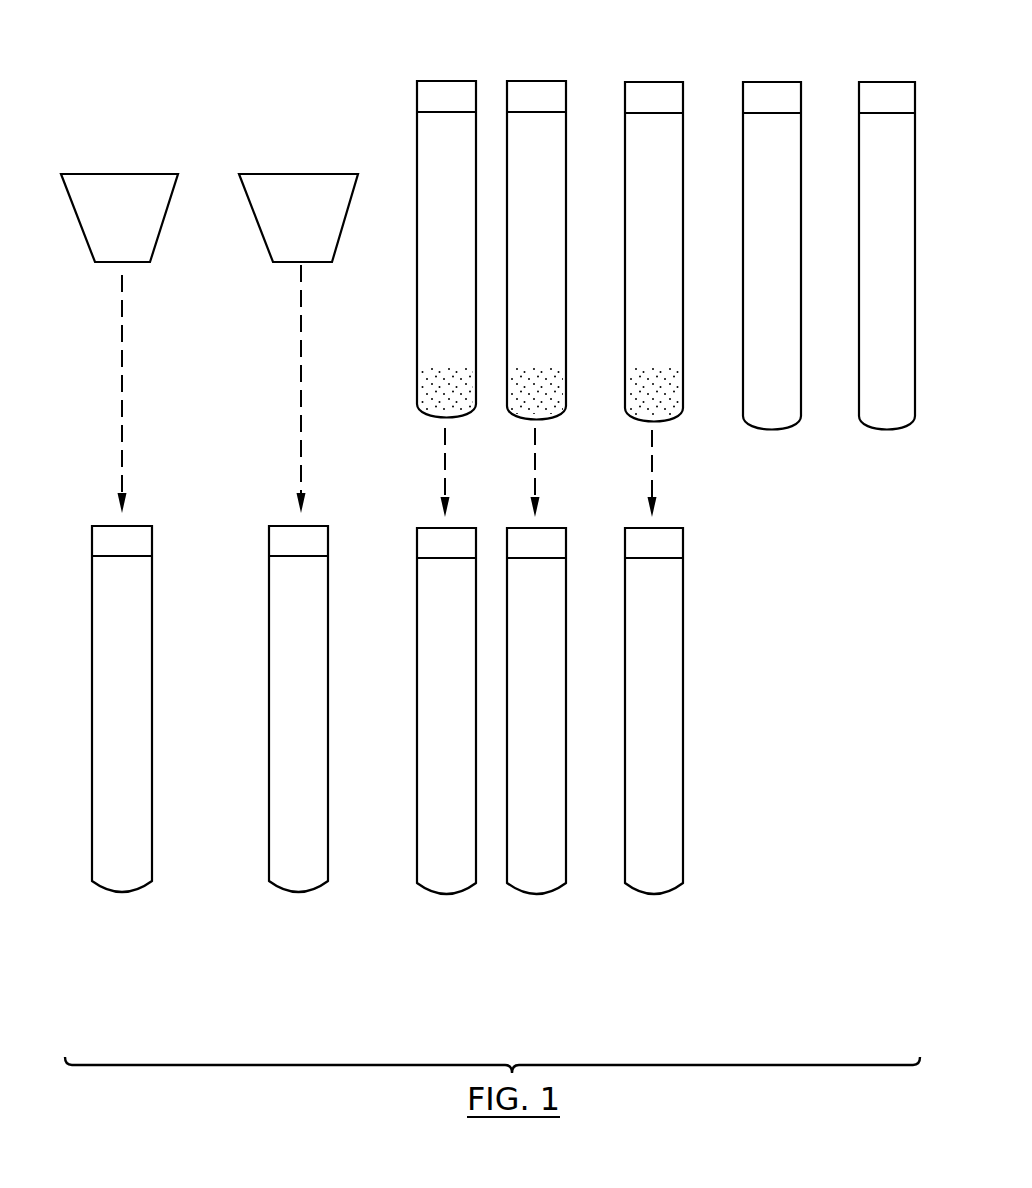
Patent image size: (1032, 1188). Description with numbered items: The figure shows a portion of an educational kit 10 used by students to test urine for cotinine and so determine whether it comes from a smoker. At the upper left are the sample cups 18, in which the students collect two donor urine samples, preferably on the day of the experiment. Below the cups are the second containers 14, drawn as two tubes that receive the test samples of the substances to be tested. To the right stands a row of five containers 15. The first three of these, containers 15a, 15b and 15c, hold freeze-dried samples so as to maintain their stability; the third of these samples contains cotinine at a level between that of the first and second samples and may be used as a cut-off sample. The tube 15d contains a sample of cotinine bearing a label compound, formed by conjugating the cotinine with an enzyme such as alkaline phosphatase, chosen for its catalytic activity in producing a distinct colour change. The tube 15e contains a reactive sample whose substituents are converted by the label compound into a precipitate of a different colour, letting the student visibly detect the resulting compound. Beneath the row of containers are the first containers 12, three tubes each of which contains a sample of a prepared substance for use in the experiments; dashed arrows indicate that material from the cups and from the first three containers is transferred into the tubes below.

The kit 10 is at (368, 136).
The sample cups 18 is at (157, 166).
The containers 15 is at (915, 58).
The container 15a is at (462, 419).
The container 15b is at (552, 421).
The container 15c is at (670, 423).
The tube 15d is at (784, 431).
The tube 15e is at (897, 431).
The second containers 14 is at (88, 943).
The first containers 12 is at (683, 943).